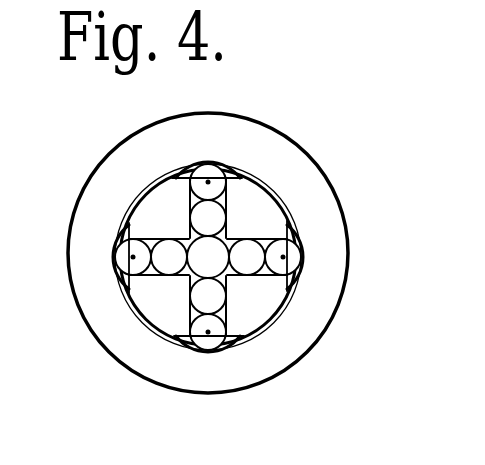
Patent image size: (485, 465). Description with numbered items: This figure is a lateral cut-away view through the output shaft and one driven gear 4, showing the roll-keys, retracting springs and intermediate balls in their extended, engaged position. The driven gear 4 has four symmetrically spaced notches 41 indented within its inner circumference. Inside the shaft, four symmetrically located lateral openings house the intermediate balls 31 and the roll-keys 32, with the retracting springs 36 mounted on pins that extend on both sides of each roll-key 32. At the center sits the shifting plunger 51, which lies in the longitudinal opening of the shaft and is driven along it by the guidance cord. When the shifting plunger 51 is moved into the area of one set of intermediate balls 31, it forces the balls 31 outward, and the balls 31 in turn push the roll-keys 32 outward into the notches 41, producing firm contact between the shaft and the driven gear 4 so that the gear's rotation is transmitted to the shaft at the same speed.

The driven gear 4 is at (275, 162).
The intermediate balls 31 is at (215, 217).
The roll-keys 32 is at (138, 263).
The retracting springs 36 is at (131, 224).
The notches 41 is at (228, 343).
The shifting plunger 51 is at (203, 255).